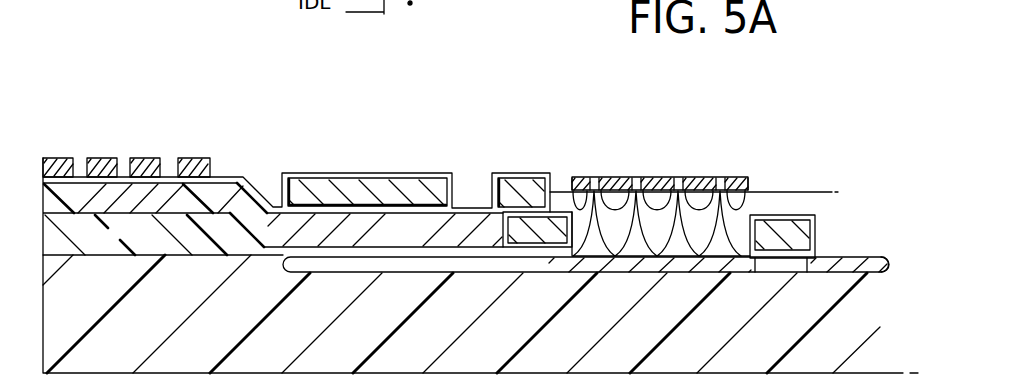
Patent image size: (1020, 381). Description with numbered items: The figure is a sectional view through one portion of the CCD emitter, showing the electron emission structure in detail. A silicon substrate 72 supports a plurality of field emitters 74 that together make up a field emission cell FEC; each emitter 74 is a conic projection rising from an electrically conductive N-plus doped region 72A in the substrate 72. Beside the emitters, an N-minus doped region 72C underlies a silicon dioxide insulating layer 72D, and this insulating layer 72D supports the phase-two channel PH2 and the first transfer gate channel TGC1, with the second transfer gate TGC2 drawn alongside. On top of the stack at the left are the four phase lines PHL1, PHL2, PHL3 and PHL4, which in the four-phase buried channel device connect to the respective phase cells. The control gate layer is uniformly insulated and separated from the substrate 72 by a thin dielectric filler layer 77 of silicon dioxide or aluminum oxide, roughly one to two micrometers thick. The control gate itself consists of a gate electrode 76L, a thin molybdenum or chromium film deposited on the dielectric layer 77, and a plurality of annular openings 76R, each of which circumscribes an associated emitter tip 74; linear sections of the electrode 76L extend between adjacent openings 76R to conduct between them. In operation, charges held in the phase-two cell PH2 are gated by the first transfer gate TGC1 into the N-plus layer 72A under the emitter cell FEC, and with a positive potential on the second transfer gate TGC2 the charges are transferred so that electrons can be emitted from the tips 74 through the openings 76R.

The silicon substrate 72 is at (213, 325).
The N+ doped region 72A is at (883, 273).
The N- doped region 72C is at (540, 274).
The silicon dioxide insulating layer 72D is at (150, 248).
The field emitter 74 is at (717, 254).
The control gate electrode 76L is at (700, 178).
The annular openings 76R is at (643, 178).
The dielectric filler layer 77 is at (783, 203).
The field emission cell FEC is at (675, 177).
The first transfer gate TGC1 is at (555, 243).
The second transfer gate TGC2 is at (815, 236).
The phase 2 cell PH2 is at (385, 229).
The phase line 1 PHL1 is at (213, 158).
The phase line 2 PHL2 is at (150, 157).
The phase line 3 PHL3 is at (107, 157).
The phase line 4 PHL4 is at (65, 157).